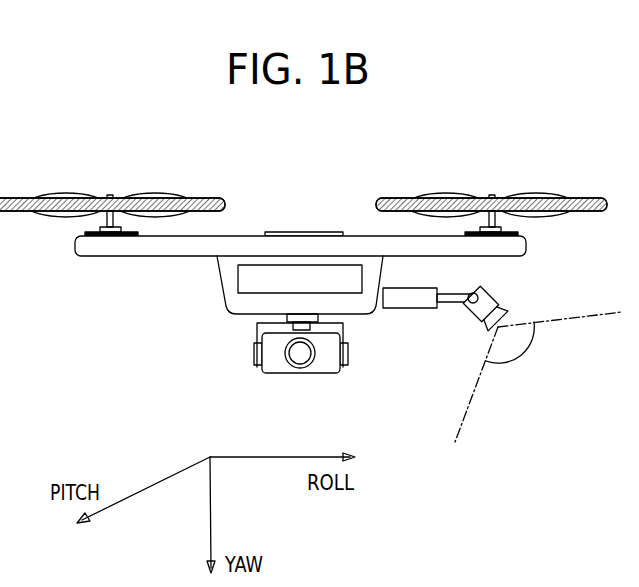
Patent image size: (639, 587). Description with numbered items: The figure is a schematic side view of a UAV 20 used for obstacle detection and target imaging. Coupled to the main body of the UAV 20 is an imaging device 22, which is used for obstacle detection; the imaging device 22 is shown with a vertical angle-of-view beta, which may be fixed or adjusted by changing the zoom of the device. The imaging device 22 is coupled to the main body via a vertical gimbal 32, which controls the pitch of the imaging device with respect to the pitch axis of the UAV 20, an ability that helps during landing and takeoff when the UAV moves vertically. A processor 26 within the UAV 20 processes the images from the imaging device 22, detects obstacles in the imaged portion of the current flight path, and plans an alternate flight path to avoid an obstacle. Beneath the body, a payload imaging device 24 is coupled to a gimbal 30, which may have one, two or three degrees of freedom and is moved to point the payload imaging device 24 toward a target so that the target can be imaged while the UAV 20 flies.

The UAV 20 is at (279, 190).
The imaging device 22 is at (472, 313).
The payload imaging device 24 is at (268, 372).
The processor 26 is at (300, 268).
The gimbal 30 is at (262, 321).
The vertical gimbal 32 is at (456, 295).